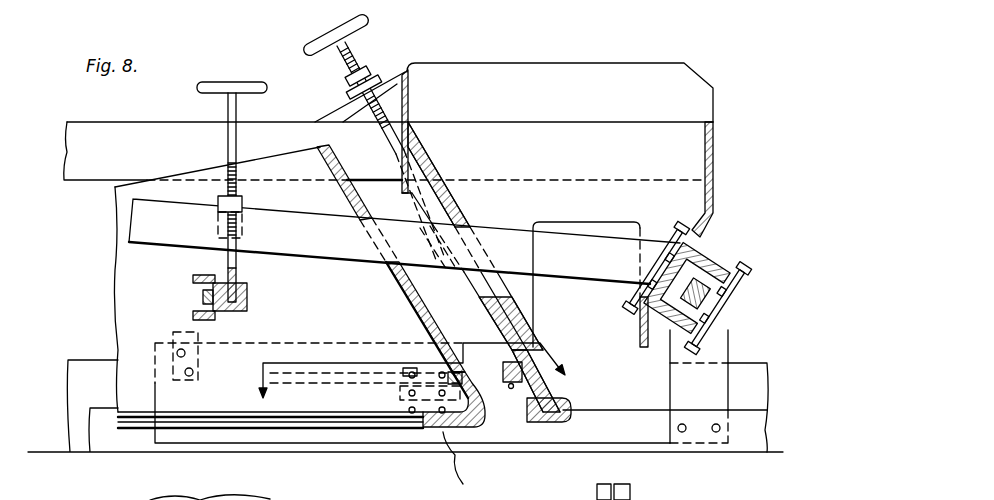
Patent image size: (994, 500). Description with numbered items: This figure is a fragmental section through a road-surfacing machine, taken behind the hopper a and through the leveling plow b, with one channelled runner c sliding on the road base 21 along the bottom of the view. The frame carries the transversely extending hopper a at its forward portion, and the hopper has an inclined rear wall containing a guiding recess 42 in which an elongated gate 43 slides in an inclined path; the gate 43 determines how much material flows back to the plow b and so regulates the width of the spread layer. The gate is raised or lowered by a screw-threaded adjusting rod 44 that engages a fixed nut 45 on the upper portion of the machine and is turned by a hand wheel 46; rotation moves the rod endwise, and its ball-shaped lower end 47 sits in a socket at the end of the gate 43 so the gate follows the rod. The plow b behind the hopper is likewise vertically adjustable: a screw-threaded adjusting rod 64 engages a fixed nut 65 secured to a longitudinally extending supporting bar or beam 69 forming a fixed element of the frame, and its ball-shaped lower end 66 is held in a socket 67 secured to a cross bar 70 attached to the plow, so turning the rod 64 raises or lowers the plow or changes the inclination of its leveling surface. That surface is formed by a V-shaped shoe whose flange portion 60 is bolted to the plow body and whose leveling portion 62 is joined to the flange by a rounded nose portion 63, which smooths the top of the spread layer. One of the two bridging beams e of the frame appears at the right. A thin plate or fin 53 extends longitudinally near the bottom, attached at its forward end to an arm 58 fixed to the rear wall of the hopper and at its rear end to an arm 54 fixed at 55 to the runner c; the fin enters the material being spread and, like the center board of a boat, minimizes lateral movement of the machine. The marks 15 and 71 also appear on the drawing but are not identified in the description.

The hopper a is at (666, 100).
The leveling plow b is at (125, 263).
The runner c is at (76, 379).
The bridging beam e is at (712, 272).
The section line 15- 15 is at (417, 371).
The road base 21 is at (712, 160).
The guiding recess 42 is at (471, 281).
The gate 43 is at (512, 325).
The adjusting rod 44 is at (413, 172).
The fixed nut 45 is at (372, 82).
The hand wheel 46 is at (330, 36).
The ball-shaped lower end 47 is at (463, 240).
The fin 53 is at (359, 348).
The arm 54 is at (172, 338).
The fastening point 55 is at (178, 362).
The arm 58 is at (545, 418).
The flange portion 60 is at (490, 395).
The leveling portion 62 is at (456, 466).
The rounded nose portion 63 is at (459, 411).
The adjusting rod 64 is at (233, 144).
The fixed nut 65 is at (240, 212).
The ball-shaped lower end 66 is at (247, 306).
The socket 67 is at (248, 292).
The supporting bar 69 is at (148, 132).
The cross bar 70 is at (195, 312).
The bracket 71 is at (632, 493).